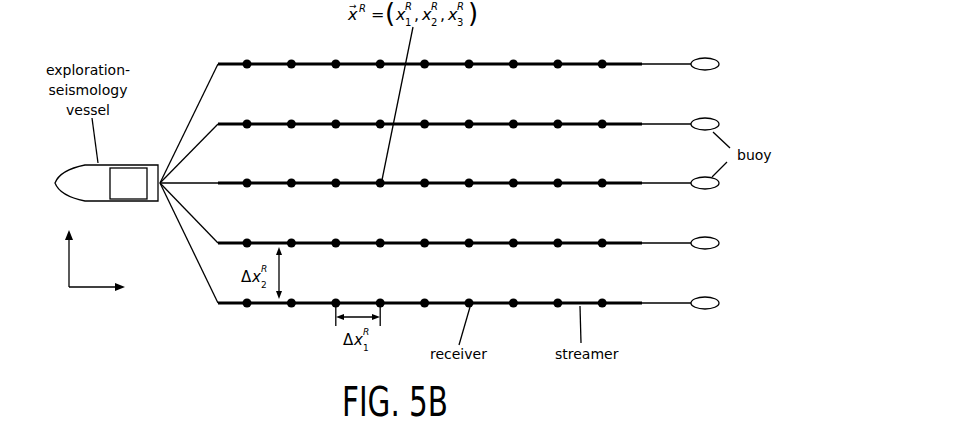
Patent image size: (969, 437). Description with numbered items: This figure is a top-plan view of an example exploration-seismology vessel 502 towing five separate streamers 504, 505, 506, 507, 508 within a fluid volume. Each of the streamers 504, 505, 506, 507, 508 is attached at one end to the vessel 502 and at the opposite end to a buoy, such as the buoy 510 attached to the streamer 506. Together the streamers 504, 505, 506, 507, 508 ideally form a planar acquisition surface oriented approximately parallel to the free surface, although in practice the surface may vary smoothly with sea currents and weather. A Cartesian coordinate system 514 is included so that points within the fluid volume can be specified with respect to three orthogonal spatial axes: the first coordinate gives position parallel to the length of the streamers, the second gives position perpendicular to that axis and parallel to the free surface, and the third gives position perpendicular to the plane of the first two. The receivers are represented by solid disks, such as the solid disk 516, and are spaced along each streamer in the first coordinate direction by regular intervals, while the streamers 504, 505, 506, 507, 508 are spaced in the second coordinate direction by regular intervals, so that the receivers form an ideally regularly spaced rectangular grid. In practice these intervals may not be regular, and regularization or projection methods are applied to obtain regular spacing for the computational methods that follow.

The exploration-seismology vessel 502 is at (80, 178).
The streamer 504 is at (629, 306).
The streamer 505 is at (628, 246).
The streamer 506 is at (628, 186).
The streamer 507 is at (627, 127).
The streamer 508 is at (629, 67).
The buoy 510 is at (712, 189).
The Cartesian coordinate system 514 is at (84, 293).
The solid disk 516 is at (384, 181).